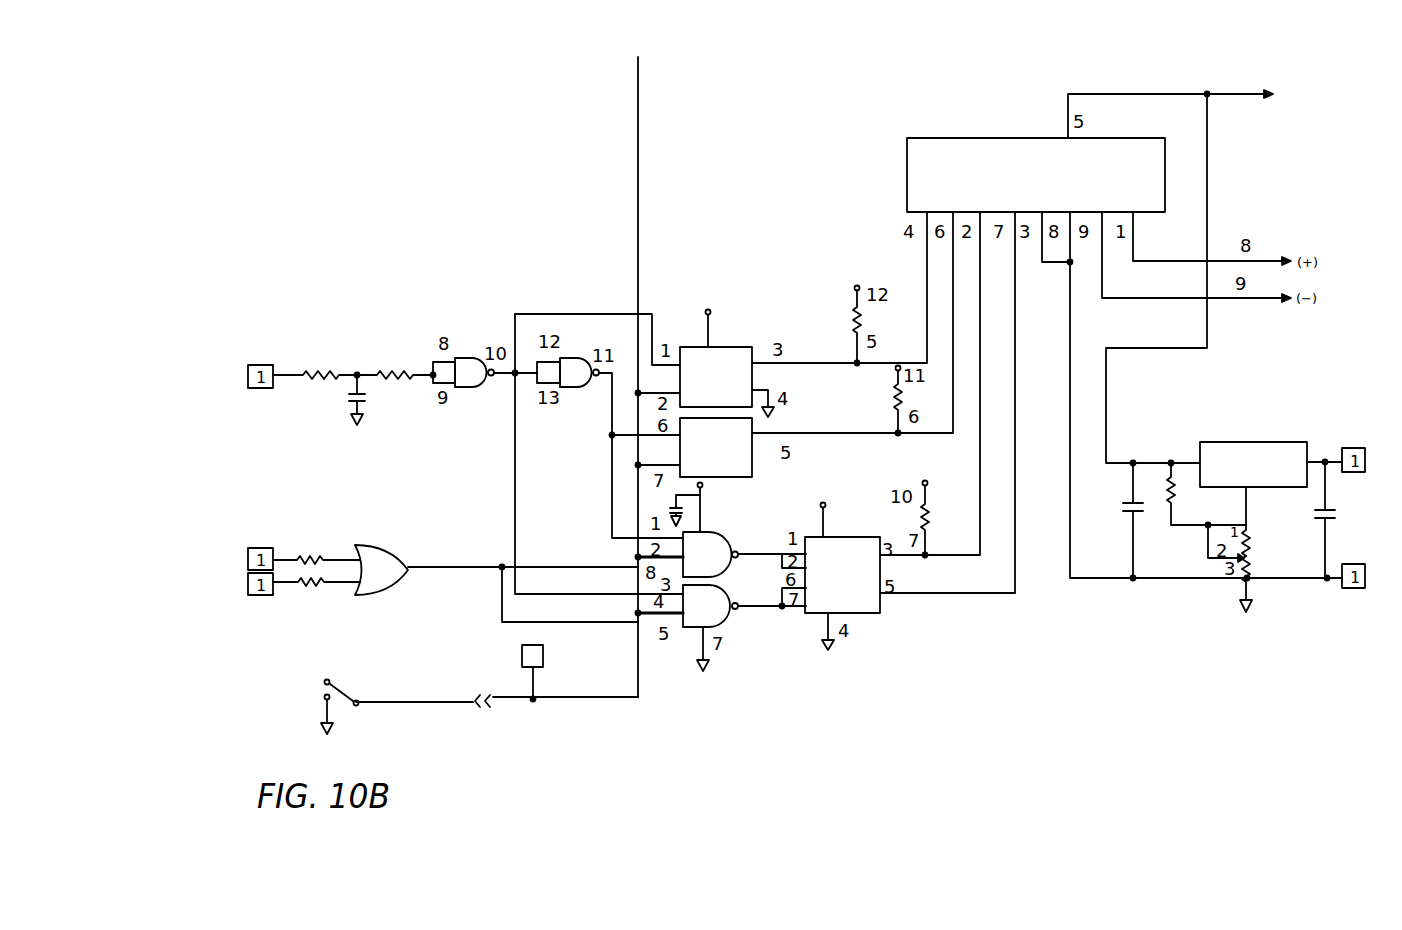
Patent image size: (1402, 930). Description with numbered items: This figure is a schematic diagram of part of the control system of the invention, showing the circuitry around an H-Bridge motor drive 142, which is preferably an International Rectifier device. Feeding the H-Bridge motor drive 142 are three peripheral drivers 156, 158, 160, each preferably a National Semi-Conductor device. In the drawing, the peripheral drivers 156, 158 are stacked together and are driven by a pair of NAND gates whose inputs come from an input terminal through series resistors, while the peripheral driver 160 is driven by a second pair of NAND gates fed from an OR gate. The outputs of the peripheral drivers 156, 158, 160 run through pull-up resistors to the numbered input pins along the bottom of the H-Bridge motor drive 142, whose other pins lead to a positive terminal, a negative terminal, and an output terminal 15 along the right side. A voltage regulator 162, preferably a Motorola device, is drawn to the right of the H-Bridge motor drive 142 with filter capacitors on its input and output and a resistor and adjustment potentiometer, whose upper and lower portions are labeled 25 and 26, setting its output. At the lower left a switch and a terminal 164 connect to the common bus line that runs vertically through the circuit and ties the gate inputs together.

The H-Bridge motor drive 142 is at (980, 142).
The peripheral driver 156 is at (723, 345).
The peripheral driver 158 is at (743, 477).
The peripheral driver 160 is at (867, 612).
The voltage regulator 162 is at (1268, 447).
The input terminal 164 is at (545, 658).
The potentiometer resistance (upper) 25 is at (1259, 521).
The potentiometer resistance (lower) 26 is at (1261, 578).
The output terminal 15 is at (1184, 110).